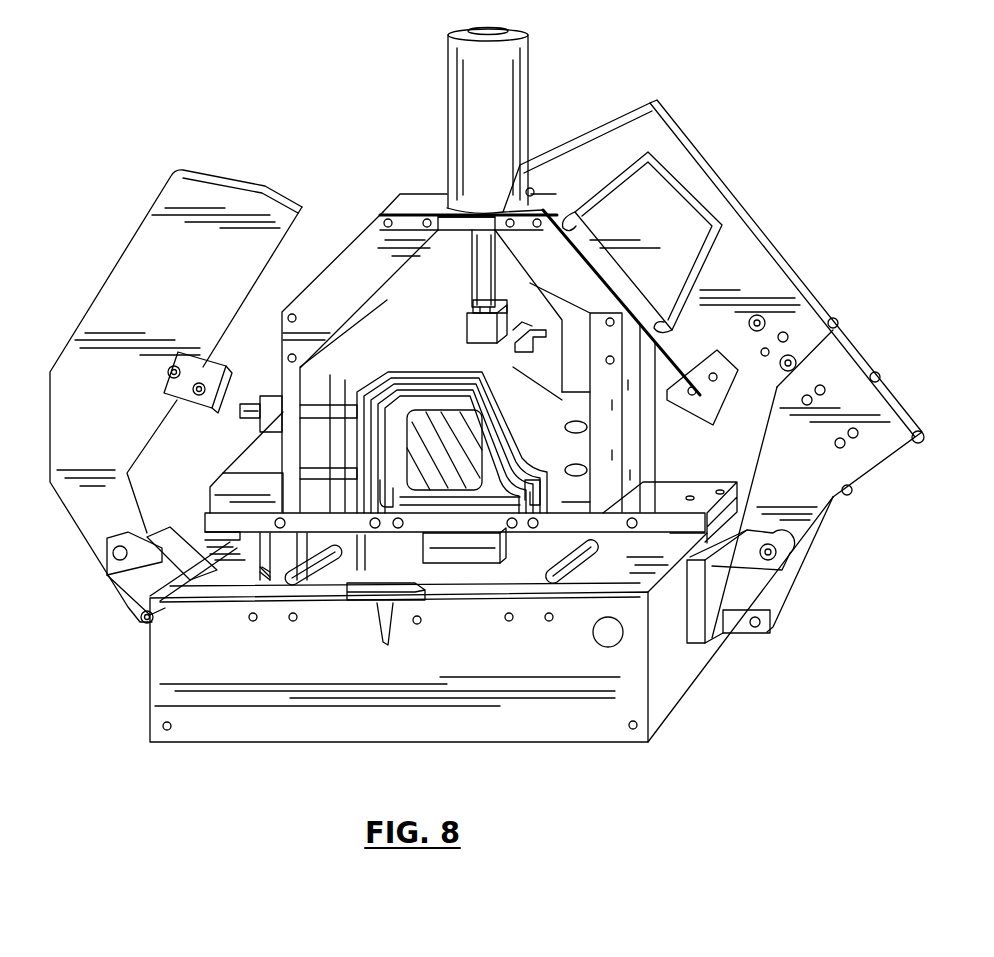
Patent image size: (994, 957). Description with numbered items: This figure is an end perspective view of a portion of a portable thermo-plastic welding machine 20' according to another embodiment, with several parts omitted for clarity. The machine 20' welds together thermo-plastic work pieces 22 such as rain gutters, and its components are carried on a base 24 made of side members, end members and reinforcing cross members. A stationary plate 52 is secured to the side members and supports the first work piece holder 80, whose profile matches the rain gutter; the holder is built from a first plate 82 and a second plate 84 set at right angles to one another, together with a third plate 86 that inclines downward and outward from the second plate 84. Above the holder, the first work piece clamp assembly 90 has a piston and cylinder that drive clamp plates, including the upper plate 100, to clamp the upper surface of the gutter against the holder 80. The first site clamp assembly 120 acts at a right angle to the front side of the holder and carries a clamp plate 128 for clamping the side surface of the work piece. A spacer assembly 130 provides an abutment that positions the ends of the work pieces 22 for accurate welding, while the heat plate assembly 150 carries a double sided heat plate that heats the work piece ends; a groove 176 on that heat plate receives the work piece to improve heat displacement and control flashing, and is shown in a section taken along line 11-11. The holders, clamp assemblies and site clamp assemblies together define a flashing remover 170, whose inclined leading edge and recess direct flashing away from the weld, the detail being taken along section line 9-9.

The welding machine 20' is at (765, 671).
The work piece 22 is at (340, 547).
The base 24 is at (207, 730).
The stationary plate 52 is at (680, 487).
The first work piece holder 80 is at (460, 508).
The first plate 82 is at (414, 490).
The second plate 84 is at (413, 403).
The third plate 86 is at (493, 466).
The first work piece clamp assembly 90 is at (428, 336).
The upper plate 100 is at (541, 413).
The first site clamp assembly 120 is at (278, 460).
The clamp plate 128 is at (357, 433).
The spacer assembly 130 is at (183, 197).
The heat plate assembly 150 is at (750, 278).
The flashing remover 170 is at (367, 360).
The groove 176 is at (667, 147).
The section line 9- 9 is at (447, 347).
The section line 11- 11 is at (690, 140).